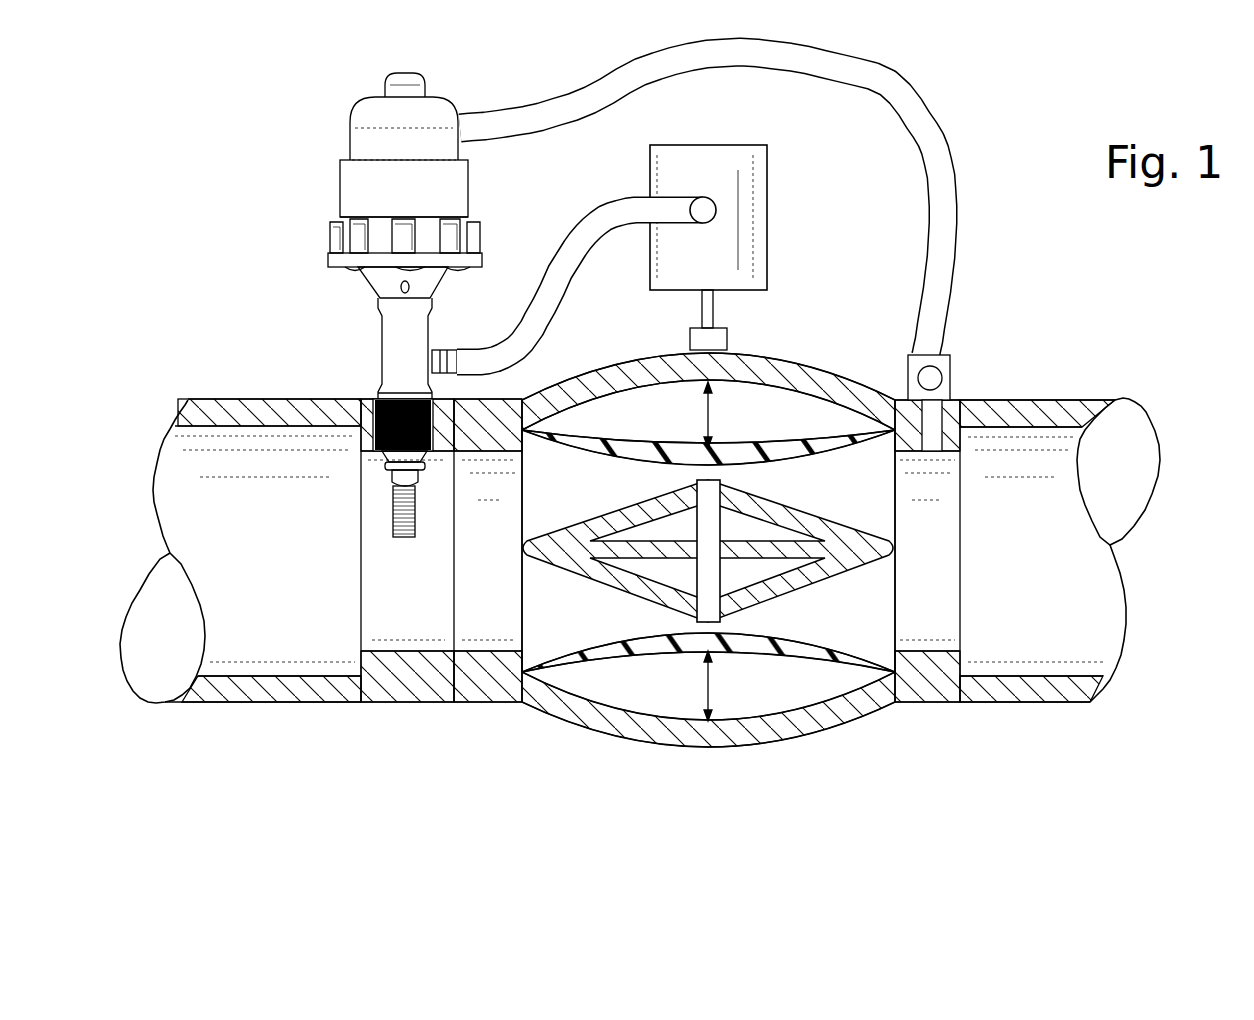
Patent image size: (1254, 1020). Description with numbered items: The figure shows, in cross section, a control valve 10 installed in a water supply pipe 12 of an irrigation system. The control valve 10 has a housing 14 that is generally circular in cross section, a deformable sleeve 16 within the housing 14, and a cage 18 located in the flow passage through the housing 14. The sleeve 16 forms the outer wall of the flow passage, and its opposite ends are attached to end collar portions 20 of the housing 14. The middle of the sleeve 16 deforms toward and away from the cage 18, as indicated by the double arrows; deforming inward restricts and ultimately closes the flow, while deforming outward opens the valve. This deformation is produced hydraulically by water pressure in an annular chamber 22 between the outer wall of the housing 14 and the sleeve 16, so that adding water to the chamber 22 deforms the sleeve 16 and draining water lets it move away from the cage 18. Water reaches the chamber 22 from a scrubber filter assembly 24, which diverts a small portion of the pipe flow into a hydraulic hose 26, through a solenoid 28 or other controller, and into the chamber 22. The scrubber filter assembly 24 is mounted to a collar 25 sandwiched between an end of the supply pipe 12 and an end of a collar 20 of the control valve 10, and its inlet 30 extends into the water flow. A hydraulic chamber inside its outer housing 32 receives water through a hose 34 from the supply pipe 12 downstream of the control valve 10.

The control valve 10 is at (660, 566).
The water supply pipe 12 is at (254, 563).
The housing 14 is at (626, 370).
The deformable sleeve 16 is at (597, 447).
The cage 18 is at (822, 512).
The end collar portions 20 is at (485, 684).
The annular chamber 22 is at (756, 433).
The scrubber filter assembly 24 is at (336, 337).
The collar 25 is at (400, 685).
The hydraulic hose 26 is at (543, 306).
The solenoid 28 is at (750, 254).
The inlet 30 is at (422, 528).
The outer housing 32 is at (360, 140).
The hose 34 is at (942, 251).